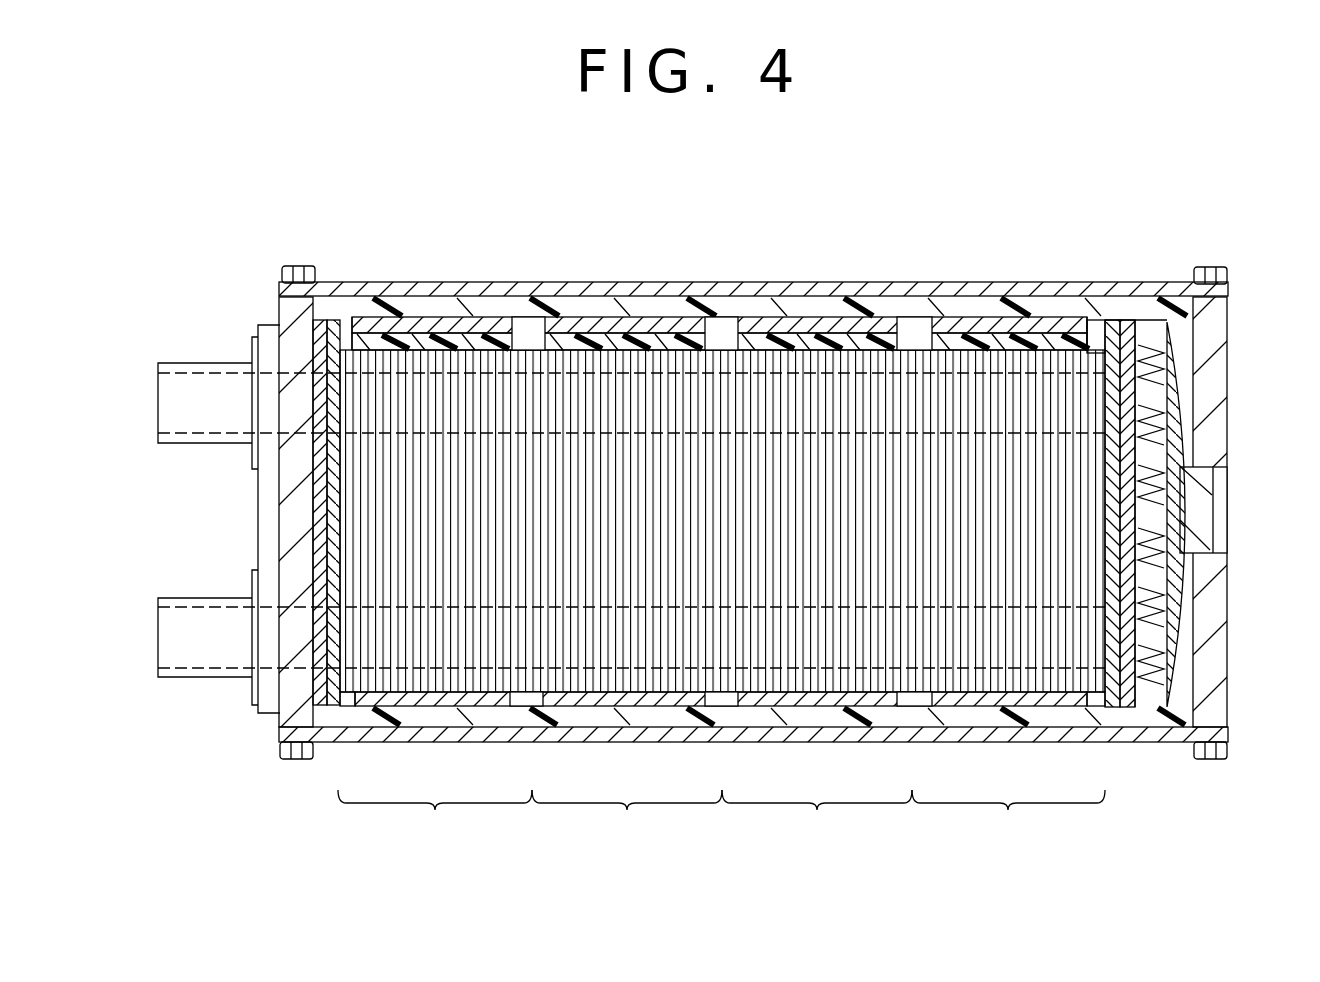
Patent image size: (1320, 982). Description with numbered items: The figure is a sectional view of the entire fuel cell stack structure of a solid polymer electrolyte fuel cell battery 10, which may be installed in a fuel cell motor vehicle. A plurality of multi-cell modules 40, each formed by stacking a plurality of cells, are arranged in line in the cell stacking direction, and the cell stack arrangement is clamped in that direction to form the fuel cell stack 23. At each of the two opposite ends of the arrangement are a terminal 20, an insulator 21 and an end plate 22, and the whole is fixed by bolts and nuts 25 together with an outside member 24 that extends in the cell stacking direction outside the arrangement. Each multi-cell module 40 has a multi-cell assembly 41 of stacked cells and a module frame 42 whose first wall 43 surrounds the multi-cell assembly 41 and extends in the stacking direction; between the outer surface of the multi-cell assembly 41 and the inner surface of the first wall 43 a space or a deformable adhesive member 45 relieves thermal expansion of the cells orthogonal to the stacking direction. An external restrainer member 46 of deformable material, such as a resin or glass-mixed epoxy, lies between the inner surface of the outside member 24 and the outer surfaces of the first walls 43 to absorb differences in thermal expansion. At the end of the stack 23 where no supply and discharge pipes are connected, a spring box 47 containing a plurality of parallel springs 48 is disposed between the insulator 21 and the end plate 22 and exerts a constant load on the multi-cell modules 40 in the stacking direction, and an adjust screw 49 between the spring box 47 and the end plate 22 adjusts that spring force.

The fuel cell battery 10 is at (1207, 337).
The terminal 20 is at (337, 335).
The insulator 21 is at (318, 335).
The end plate 22 is at (295, 337).
The fuel cell stack 23 is at (935, 283).
The outside member 24 is at (427, 293).
The bolts and nuts 25 is at (298, 273).
The multi-cell module 40 is at (721, 821).
The multi-cell assembly 41 is at (478, 335).
The module frame 42 is at (623, 323).
The first wall 43 is at (597, 323).
The deformable adhesive member 45 is at (377, 333).
The external restrainer member 46 is at (723, 318).
The spring box 47 is at (1173, 628).
The springs 48 is at (1148, 347).
The adjust screw 49 is at (1198, 528).